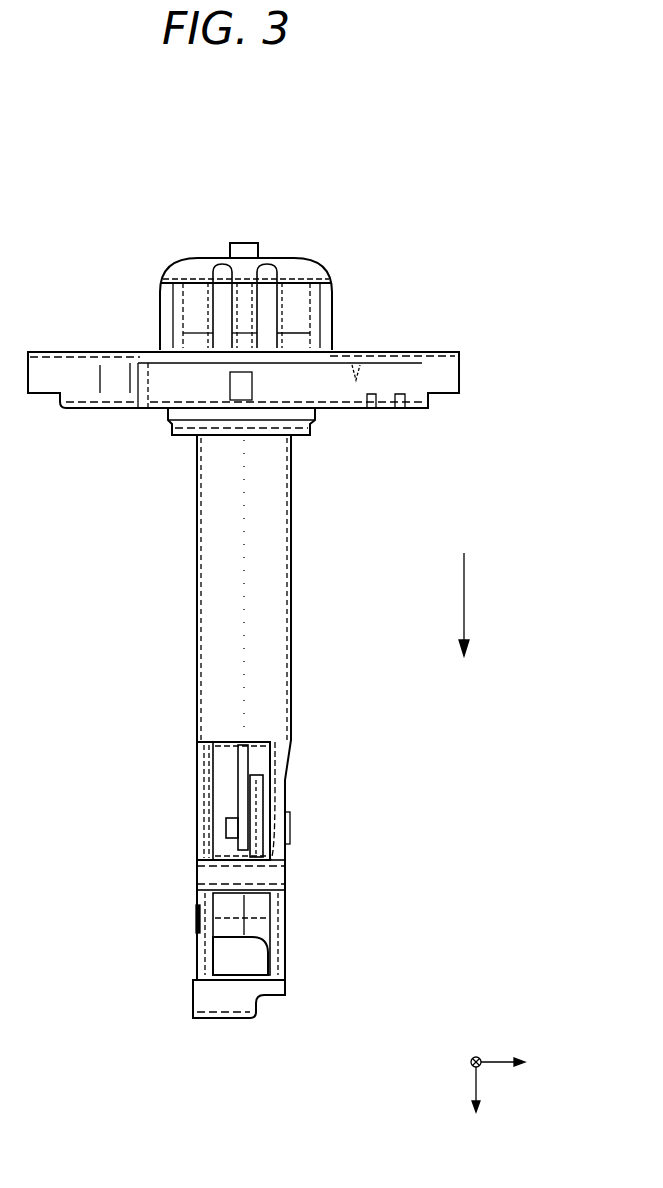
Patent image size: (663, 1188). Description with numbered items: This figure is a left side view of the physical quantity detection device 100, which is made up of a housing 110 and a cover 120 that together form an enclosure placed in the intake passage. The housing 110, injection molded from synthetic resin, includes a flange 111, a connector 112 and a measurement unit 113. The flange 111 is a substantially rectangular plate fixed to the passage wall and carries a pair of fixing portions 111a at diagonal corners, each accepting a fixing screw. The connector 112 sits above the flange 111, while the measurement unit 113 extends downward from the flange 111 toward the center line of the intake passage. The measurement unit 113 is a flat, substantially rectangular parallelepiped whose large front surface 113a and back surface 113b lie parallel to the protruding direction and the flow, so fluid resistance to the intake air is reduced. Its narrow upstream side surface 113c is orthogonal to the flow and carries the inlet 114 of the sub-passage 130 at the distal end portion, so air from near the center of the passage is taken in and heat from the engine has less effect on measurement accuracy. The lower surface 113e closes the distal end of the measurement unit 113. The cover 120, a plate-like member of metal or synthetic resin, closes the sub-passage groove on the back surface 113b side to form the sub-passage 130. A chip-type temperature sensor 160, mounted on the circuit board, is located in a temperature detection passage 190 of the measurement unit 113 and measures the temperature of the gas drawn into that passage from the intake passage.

The physical quantity detection device 100 is at (93, 228).
The housing 110 is at (296, 537).
The flange 111 is at (440, 346).
The fixing portion 111a is at (96, 350).
The connector 112 is at (300, 258).
The measurement unit 113 is at (193, 626).
The front surface 113a is at (293, 589).
The back surface 113b is at (196, 553).
The upstream side surface 113c is at (255, 662).
The lower surface 113e is at (230, 1018).
The inlet 114 is at (252, 888).
The cover 120 is at (195, 804).
The sub-passage 130 is at (228, 931).
The temperature sensor 160 is at (228, 829).
The temperature detection passage 190 is at (225, 774).